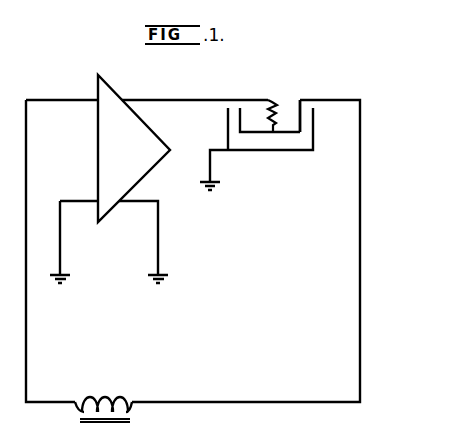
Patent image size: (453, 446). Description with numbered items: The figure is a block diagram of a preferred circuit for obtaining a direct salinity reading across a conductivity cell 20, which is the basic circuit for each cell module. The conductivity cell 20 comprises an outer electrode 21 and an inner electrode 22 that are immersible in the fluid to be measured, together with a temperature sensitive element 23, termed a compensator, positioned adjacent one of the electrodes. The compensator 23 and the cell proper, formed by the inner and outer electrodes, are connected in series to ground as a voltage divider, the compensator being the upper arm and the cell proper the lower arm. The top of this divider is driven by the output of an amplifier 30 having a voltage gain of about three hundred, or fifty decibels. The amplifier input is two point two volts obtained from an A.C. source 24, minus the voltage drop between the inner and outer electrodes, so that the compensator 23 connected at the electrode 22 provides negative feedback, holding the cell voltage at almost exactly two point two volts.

The amplifier 30 is at (118, 91).
The conductivity cell 20 is at (267, 97).
The outer electrode 21 is at (278, 152).
The inner electrode 22 is at (297, 104).
The temperature sensitive element 23 is at (275, 98).
The A.C. source 24 is at (112, 424).